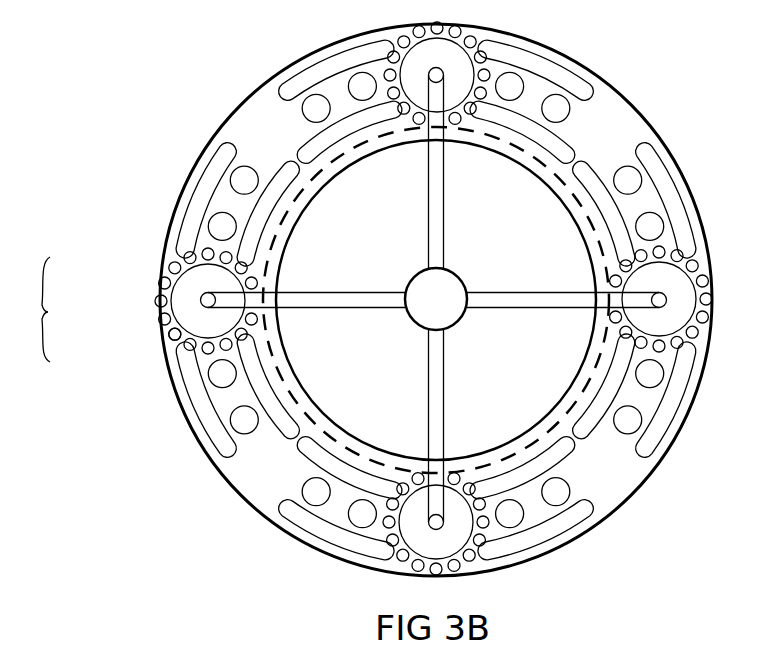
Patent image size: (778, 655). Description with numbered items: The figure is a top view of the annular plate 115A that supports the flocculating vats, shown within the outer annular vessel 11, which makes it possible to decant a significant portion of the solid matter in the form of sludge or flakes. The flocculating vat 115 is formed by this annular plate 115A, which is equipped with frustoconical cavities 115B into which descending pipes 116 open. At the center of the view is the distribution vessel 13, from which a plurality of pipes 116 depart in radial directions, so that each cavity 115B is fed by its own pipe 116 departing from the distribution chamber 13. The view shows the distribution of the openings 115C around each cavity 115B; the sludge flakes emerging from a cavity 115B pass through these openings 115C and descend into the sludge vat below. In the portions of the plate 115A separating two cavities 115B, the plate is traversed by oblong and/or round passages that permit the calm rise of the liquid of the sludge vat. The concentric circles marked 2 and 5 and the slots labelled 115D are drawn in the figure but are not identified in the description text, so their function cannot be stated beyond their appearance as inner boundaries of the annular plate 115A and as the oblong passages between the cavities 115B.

The inner circle of plate 2 is at (293, 240).
The dashed circle 5 is at (309, 185).
The outer annular vessel 11 is at (223, 121).
The distribution vessel 13 is at (413, 278).
The flocculating vat 115 is at (48, 312).
The annular plate 115A is at (167, 275).
The frustoconical cavities 115B is at (388, 50).
The openings 115C is at (173, 338).
The slots and holes 115D is at (213, 184).
The descending pipes 116 is at (428, 217).